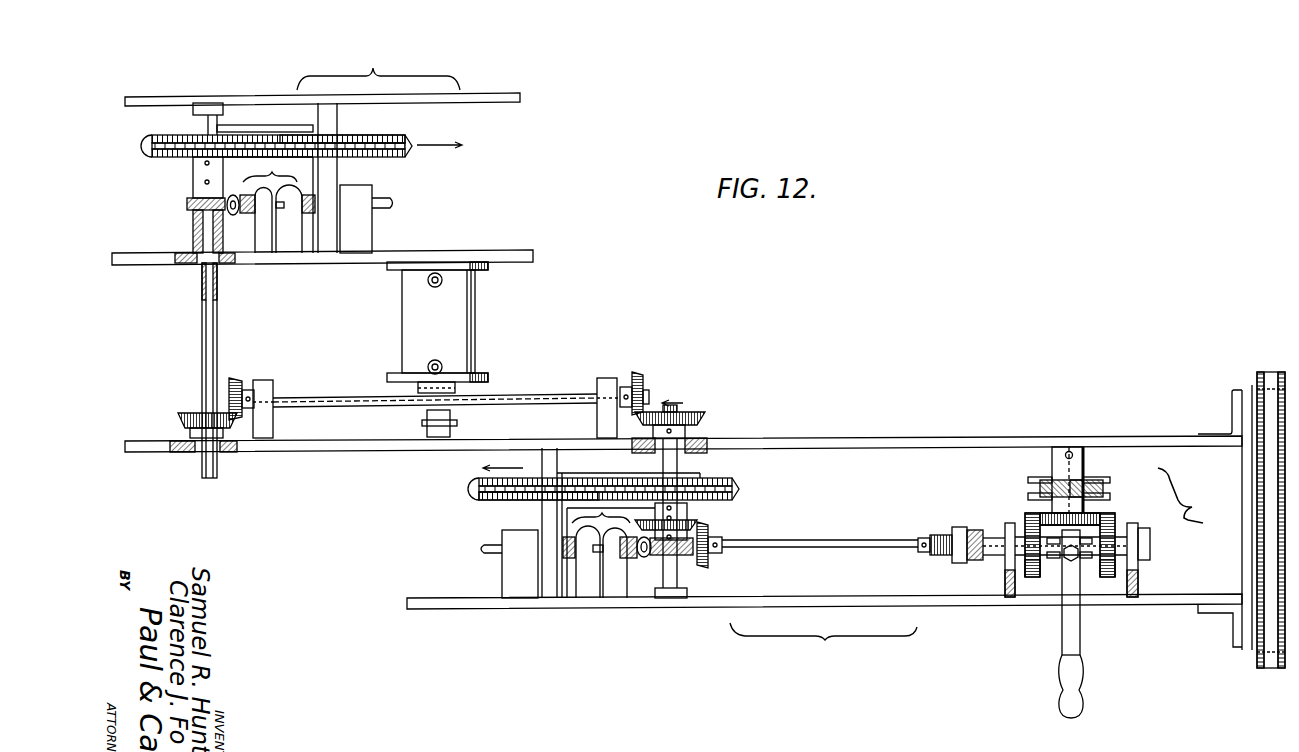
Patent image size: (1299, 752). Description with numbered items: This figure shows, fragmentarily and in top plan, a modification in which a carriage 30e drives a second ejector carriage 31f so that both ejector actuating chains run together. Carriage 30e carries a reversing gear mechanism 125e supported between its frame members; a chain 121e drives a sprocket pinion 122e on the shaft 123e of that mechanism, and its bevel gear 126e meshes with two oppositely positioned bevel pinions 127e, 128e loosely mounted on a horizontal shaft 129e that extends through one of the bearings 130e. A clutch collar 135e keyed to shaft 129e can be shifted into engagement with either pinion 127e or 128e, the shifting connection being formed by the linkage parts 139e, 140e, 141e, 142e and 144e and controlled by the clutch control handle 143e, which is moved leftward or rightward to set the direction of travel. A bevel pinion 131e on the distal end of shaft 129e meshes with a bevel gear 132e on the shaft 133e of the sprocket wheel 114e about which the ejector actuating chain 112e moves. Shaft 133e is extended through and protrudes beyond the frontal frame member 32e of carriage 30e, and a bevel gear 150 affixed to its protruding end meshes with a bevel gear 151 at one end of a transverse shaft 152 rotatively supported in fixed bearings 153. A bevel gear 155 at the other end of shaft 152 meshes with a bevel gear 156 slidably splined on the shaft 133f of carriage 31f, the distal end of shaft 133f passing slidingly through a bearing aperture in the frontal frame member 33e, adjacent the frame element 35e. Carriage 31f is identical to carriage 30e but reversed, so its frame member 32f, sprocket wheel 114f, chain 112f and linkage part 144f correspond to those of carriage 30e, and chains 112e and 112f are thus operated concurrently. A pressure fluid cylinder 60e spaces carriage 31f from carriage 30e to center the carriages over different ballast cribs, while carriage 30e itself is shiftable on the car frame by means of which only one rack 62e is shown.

The second ejector carriage 31f is at (378, 65).
The frame member 32f is at (505, 95).
The ejector actuating chain 112f is at (400, 135).
The sprocket wheel 114f is at (150, 146).
The clutch collar shifting part 144f is at (265, 167).
The shaft 133f is at (205, 306).
The pressure fluid cylinder 60e is at (452, 318).
The bevel gear 155 is at (235, 378).
The fixed bearings 153 is at (270, 381).
The transverse shaft 152 is at (528, 396).
The bevel gear 151 is at (640, 373).
The bevel gear 150 is at (700, 415).
The bevel gear 156 is at (186, 411).
The frontal frame member 32e is at (890, 437).
The shaft 133e is at (668, 580).
The sprocket wheel 114e is at (739, 488).
The ejector actuating chain 112e is at (478, 502).
The clutch collar shifting part 144e is at (600, 512).
The bevel gear 132e is at (697, 522).
The bevel pinion 131e is at (702, 568).
The horizontal shaft 129e is at (817, 540).
The clutch shifting element 142e is at (913, 543).
The clutch shifting element 141e is at (937, 535).
The clutch shifting element 140e is at (963, 565).
The clutch shifting element 139e is at (1000, 515).
The bearings 130e is at (1140, 563).
The clutch collar 135e is at (1087, 515).
The bevel gear 126e is at (1047, 513).
The bevel pinion 127e is at (1035, 572).
The bevel pinion 128e is at (1107, 583).
The reversing gear mechanism 125e is at (1198, 494).
The clutch control handle 143e is at (1073, 695).
The shaft 123e is at (1069, 448).
The chain 121e is at (1040, 477).
The sprocket pinion 122e is at (1082, 480).
The frontal frame member 33e is at (1223, 430).
The carriage frame element 35e is at (1247, 542).
The rack 62e is at (1268, 660).
The carriage 30e is at (823, 643).